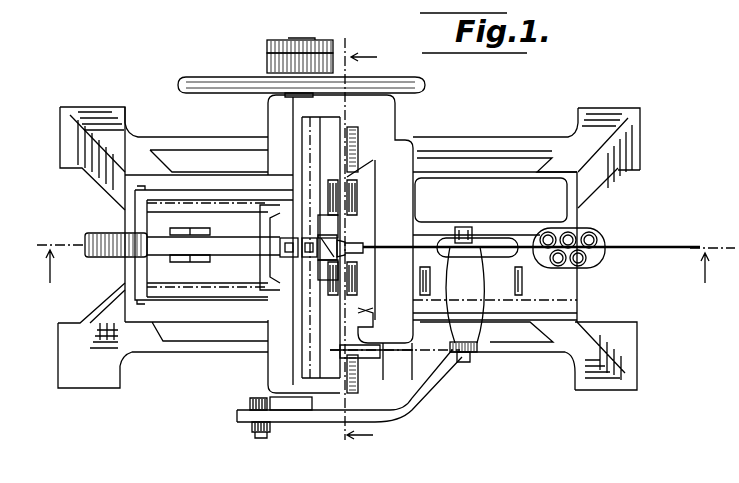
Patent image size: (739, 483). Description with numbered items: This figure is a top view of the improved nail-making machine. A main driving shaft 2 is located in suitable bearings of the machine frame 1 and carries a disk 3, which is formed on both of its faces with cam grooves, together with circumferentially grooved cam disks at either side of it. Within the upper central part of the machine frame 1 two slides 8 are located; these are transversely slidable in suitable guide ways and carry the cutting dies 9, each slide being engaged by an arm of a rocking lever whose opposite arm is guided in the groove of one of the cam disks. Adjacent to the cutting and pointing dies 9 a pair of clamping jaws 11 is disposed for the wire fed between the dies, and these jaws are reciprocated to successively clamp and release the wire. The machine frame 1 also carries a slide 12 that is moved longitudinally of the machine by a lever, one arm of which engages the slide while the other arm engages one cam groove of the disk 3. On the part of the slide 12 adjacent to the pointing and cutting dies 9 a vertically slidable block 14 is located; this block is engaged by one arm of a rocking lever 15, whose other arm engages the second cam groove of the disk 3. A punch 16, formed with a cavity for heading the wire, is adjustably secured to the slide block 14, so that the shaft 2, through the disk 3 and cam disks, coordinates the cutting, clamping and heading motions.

The machine frame 1 is at (125, 177).
The main driving shaft 2 is at (343, 86).
The disk 3 is at (385, 264).
The slides 8 is at (328, 360).
The cutting dies 9 is at (338, 258).
The clamping jaws 11 is at (378, 243).
The slide 12 is at (230, 277).
The slide block 14 is at (285, 257).
The rocking lever 15 is at (97, 257).
The punch 16 is at (343, 237).